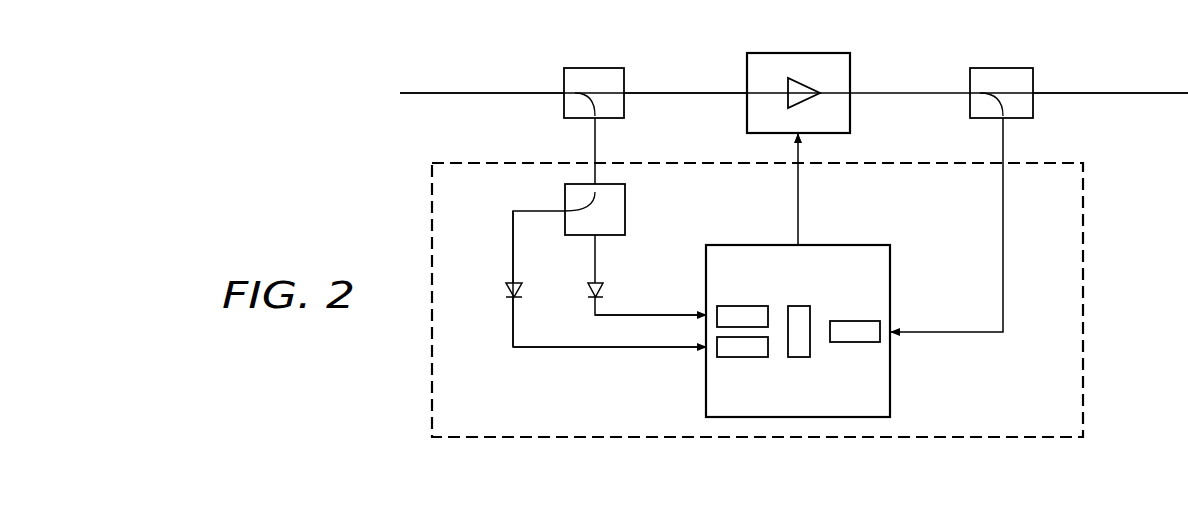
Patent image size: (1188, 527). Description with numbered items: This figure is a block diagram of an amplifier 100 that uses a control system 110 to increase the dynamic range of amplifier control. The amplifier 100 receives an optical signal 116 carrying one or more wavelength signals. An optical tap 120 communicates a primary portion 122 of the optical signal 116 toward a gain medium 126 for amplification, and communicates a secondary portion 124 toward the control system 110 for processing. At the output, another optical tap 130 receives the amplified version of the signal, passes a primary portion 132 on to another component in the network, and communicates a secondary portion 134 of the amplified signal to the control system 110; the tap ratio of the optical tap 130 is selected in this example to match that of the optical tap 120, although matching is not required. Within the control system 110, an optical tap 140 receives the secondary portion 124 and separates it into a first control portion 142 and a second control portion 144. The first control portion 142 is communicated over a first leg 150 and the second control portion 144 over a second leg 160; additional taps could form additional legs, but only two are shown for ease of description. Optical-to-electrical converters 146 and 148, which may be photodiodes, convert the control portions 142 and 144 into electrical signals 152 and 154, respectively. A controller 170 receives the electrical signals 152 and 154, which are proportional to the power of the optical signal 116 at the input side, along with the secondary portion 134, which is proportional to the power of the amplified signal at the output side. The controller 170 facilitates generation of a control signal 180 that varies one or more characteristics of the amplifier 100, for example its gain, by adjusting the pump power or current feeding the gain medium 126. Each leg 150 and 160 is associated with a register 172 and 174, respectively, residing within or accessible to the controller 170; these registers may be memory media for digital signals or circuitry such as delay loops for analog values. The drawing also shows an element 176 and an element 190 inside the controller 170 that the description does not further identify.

The amplifier 100 is at (903, 45).
The control system 110 is at (1083, 320).
The optical signal 116 is at (483, 93).
The optical tap 120 is at (595, 68).
The primary portion 122 is at (686, 93).
The secondary portion 124 is at (595, 149).
The gain medium 126 is at (800, 53).
The optical tap 130 is at (1002, 68).
The primary portion 132 is at (1117, 93).
The secondary portion 134 is at (1003, 257).
The optical tap 140 is at (565, 200).
The first control portion 142 is at (595, 265).
The second control portion 144 is at (513, 257).
The optical-to-electrical converter 146 is at (588, 291).
The optical-to-electrical converter 148 is at (508, 291).
The first leg 150 is at (654, 245).
The electrical signal 152 is at (667, 315).
The electrical signal 154 is at (583, 347).
The second leg 160 is at (521, 365).
The controller 170 is at (890, 386).
The register 172 is at (742, 306).
The register 174 is at (738, 360).
The third controller input 176 is at (853, 321).
The control signal 180 is at (799, 200).
The processor 190 is at (797, 306).